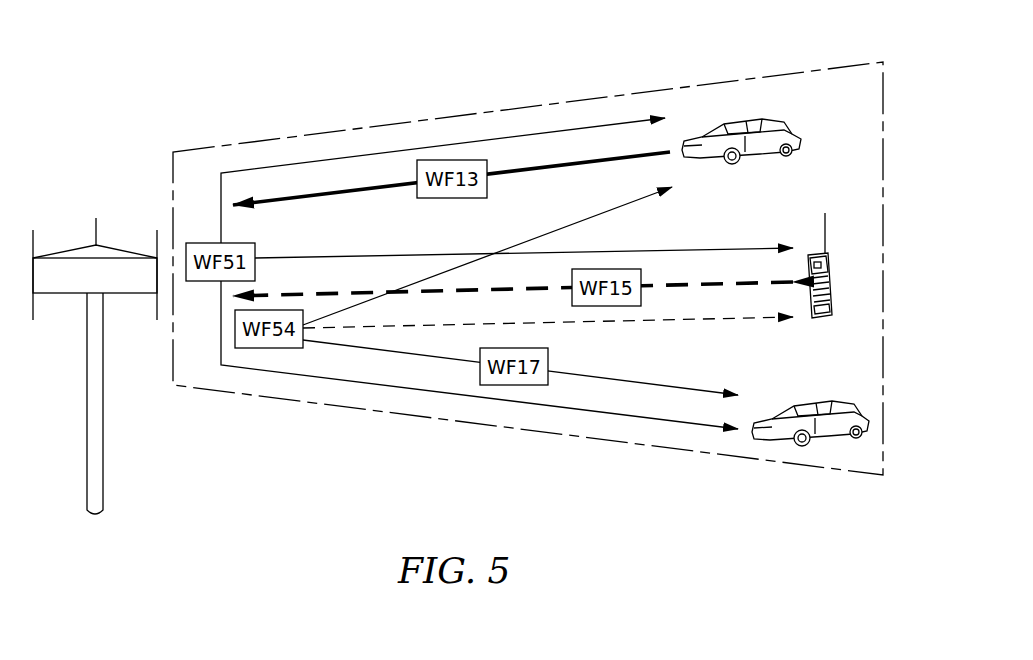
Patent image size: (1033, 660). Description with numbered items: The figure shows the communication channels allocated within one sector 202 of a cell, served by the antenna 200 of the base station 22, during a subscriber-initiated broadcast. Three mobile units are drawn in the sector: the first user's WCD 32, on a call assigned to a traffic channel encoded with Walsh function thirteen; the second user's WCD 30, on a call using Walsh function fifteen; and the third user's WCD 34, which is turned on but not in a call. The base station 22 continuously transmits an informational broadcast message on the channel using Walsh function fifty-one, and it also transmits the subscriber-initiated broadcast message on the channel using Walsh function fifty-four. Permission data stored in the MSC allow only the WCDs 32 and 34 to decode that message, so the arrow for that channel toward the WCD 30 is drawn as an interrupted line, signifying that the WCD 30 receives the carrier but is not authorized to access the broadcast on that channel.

The antenna 200 is at (88, 246).
The base station 22 is at (103, 460).
The sector 202 is at (221, 392).
The mobile unit (WCD) 32 is at (774, 155).
The mobile unit (WCD) 30 is at (830, 252).
The mobile unit (WCD) 34 is at (836, 402).